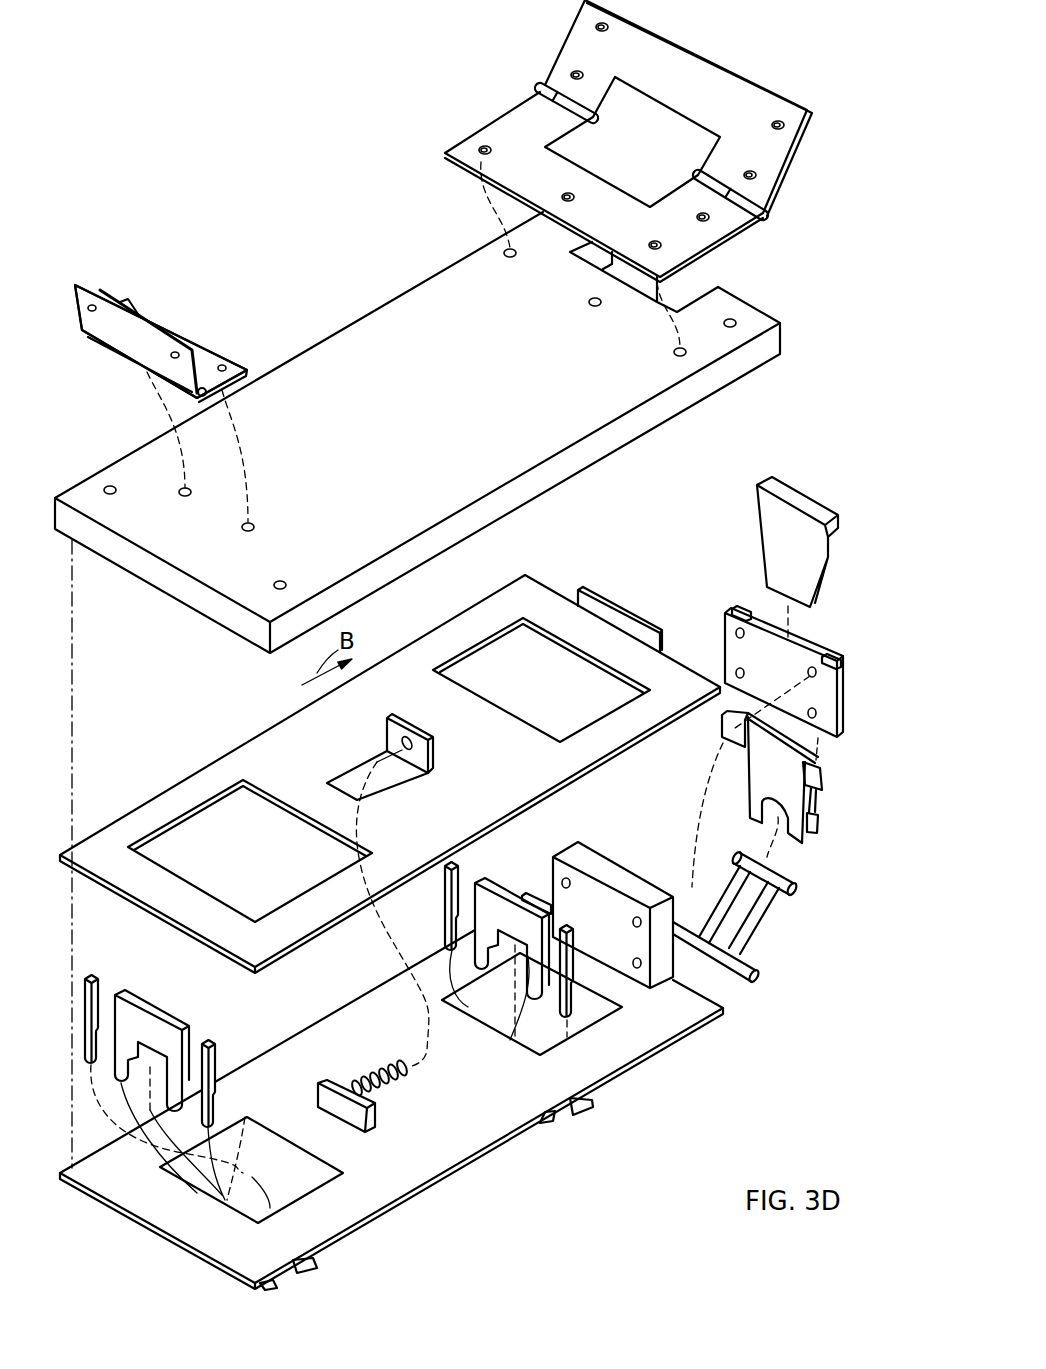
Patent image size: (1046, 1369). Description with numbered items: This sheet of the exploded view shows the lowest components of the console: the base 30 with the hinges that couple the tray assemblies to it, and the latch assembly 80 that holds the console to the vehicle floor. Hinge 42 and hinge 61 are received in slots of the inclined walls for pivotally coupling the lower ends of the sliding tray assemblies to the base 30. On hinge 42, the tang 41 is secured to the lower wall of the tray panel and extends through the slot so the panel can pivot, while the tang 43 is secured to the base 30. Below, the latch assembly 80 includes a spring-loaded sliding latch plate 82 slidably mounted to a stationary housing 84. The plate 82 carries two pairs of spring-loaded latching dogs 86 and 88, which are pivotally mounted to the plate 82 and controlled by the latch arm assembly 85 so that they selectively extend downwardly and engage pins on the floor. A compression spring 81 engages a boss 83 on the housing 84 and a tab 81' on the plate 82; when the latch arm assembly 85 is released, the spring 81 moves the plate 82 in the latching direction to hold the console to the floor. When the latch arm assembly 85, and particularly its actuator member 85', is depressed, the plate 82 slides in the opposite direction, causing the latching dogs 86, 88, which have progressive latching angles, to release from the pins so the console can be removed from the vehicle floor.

The base 30 is at (388, 300).
The tang 41 is at (133, 338).
The hinge 42 is at (102, 292).
The tang 43 is at (197, 347).
The hinge 61 is at (719, 48).
The latch assembly 80 is at (847, 405).
The compression spring 81 is at (379, 1057).
The tab 81' is at (388, 877).
The sliding latch plate 82 is at (197, 767).
The boss 83 is at (337, 1085).
The stationary housing 84 is at (470, 1170).
The latch arm assembly 85 is at (781, 751).
The actuator member 85' is at (797, 512).
The latching dog 86 is at (125, 990).
The latching dog 88 is at (91, 974).